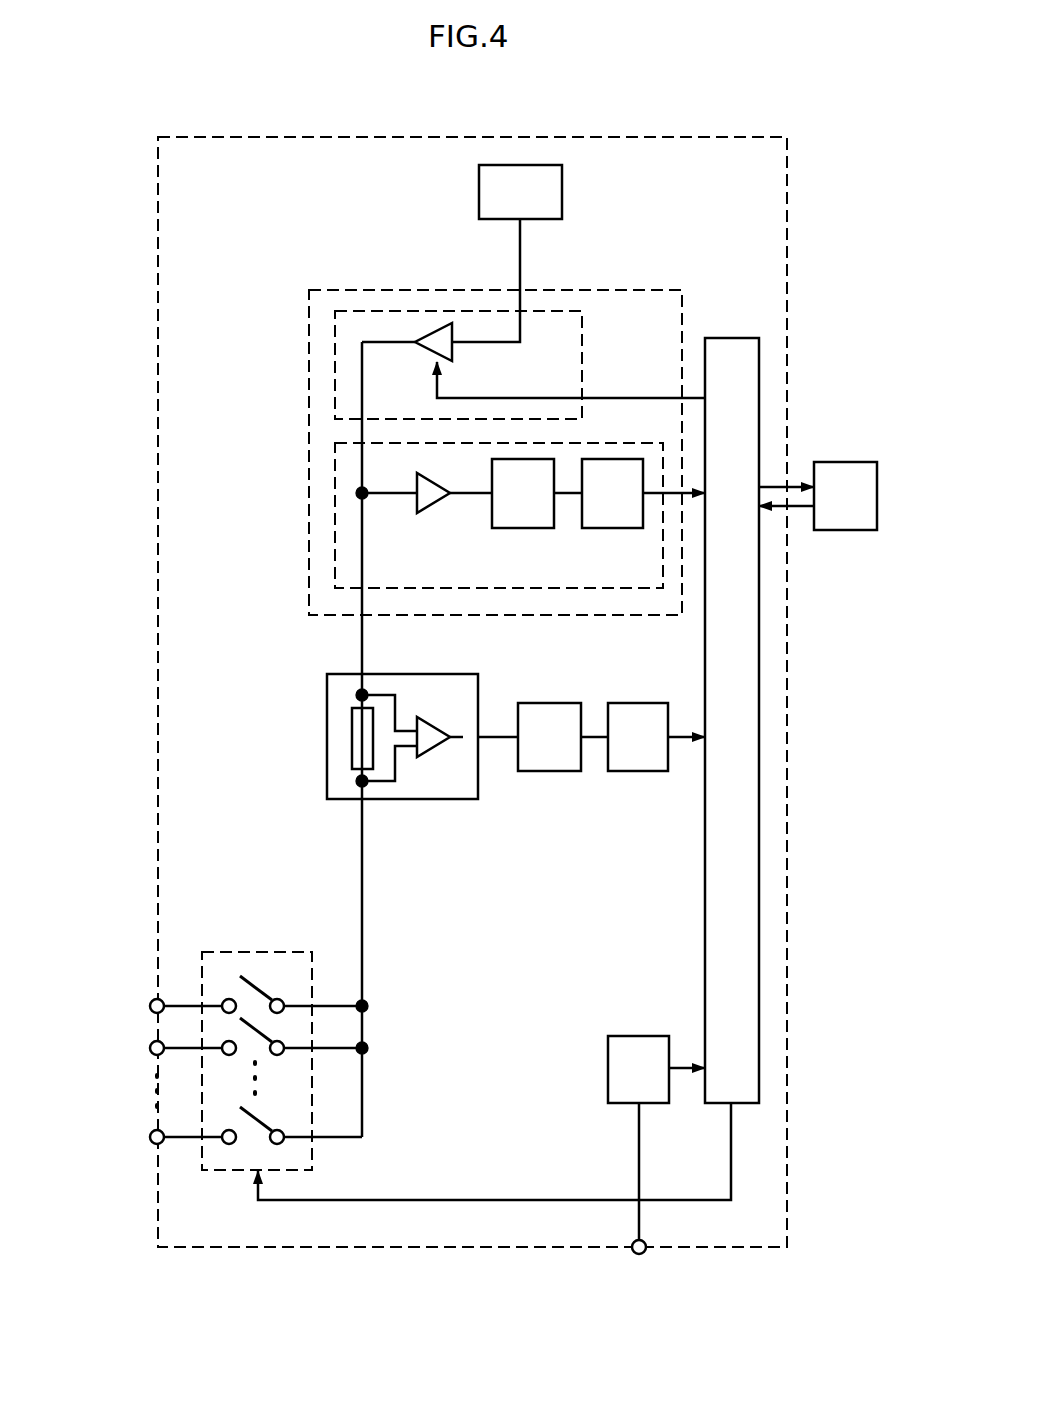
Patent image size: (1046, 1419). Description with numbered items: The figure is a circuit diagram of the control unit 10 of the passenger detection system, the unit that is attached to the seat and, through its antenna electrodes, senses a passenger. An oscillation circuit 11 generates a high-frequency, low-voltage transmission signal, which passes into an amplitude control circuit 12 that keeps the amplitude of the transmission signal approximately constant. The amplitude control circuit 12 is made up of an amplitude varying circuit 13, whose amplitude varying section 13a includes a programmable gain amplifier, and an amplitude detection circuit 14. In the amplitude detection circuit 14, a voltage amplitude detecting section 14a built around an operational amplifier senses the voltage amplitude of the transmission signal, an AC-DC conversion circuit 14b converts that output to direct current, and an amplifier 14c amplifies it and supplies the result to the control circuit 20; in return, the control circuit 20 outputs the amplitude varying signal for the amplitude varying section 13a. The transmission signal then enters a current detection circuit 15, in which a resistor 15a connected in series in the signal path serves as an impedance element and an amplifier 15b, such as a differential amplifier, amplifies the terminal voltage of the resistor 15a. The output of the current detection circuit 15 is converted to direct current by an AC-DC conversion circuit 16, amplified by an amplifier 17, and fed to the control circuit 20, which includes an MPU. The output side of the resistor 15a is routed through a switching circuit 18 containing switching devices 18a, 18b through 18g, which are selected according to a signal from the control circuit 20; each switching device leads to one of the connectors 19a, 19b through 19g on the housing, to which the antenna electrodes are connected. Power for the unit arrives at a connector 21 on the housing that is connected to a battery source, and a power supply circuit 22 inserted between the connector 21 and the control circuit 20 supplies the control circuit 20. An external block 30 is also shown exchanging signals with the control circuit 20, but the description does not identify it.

The control unit 10 is at (787, 186).
The oscillation circuit 11 is at (563, 187).
The amplitude control circuit 12 is at (309, 310).
The amplitude varying circuit 13 is at (335, 387).
The amplitude varying section 13a is at (452, 352).
The amplitude detection circuit 14 is at (335, 521).
The voltage amplitude detecting section 14a is at (430, 512).
The AC-DC conversion circuit 14b is at (517, 520).
The amplifier 14c is at (605, 520).
The current detection circuit 15 is at (327, 698).
The resistor 15a is at (352, 742).
The amplifier 15b is at (434, 748).
The AC-DC conversion circuit 16 is at (545, 703).
The amplifier 17 is at (632, 703).
The switching circuit 18 is at (226, 952).
The switching device 18a is at (266, 986).
The switching device 18b is at (266, 1030).
The switching device 18g is at (266, 1120).
The connector 19a is at (150, 1006).
The connector 19b is at (150, 1048).
The connector 19g is at (150, 1137).
The control circuit 20 is at (727, 336).
The connector 21 is at (638, 1255).
The power supply circuit 22 is at (615, 1090).
The external device 30 is at (877, 500).